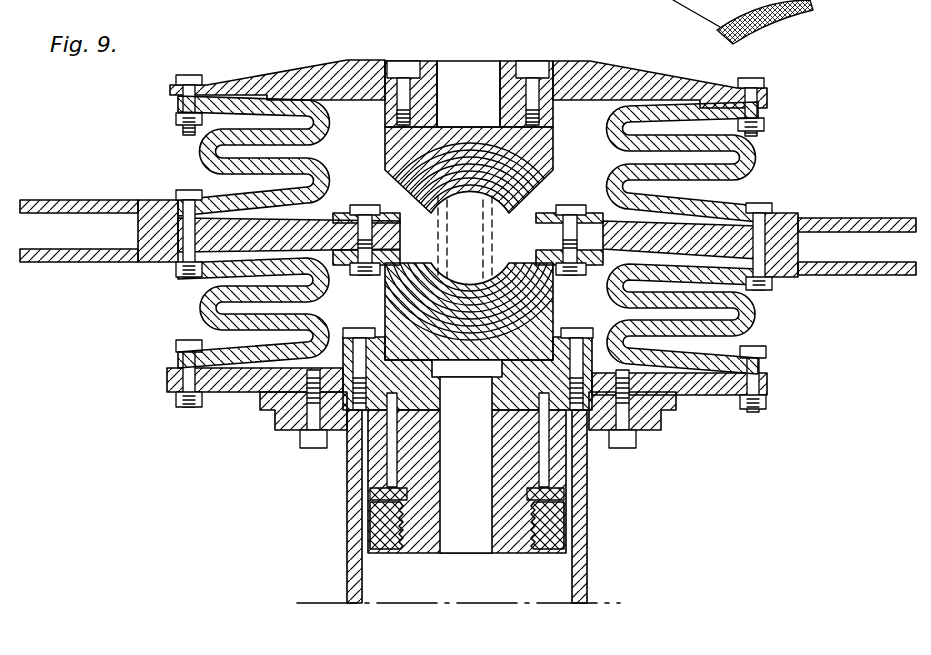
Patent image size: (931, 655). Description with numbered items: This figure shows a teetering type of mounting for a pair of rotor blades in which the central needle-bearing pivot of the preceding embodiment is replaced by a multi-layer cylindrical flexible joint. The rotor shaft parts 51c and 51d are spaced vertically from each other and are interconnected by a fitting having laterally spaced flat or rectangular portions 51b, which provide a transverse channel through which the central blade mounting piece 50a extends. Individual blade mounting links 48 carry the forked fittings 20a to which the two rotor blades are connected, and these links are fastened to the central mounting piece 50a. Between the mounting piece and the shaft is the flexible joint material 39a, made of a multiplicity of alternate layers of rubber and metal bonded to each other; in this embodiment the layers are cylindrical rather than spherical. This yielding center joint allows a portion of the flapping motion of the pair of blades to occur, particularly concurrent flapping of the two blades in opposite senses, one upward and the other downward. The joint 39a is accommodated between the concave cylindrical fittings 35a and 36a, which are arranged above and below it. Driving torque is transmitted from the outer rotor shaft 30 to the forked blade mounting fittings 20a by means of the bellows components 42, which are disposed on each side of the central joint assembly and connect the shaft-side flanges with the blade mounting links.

The forked fitting 20a is at (782, 222).
The outer shaft 30 is at (578, 568).
The concave cylindrical fitting 35a is at (390, 133).
The concave cylindrical fitting 36a is at (348, 440).
The flexible joint material 39a is at (545, 186).
The bellows components 42 is at (733, 163).
The blade mounting link 48 is at (227, 245).
The central blade mounting piece 50a is at (340, 213).
The flat or rectangular portions 51b is at (395, 278).
The rotor shaft part 51c is at (513, 545).
The rotor shaft part 51d is at (510, 77).